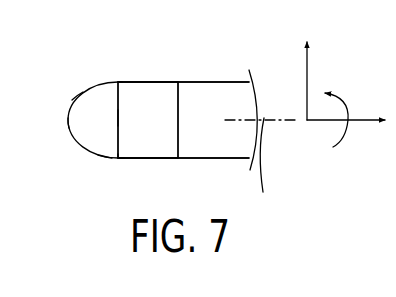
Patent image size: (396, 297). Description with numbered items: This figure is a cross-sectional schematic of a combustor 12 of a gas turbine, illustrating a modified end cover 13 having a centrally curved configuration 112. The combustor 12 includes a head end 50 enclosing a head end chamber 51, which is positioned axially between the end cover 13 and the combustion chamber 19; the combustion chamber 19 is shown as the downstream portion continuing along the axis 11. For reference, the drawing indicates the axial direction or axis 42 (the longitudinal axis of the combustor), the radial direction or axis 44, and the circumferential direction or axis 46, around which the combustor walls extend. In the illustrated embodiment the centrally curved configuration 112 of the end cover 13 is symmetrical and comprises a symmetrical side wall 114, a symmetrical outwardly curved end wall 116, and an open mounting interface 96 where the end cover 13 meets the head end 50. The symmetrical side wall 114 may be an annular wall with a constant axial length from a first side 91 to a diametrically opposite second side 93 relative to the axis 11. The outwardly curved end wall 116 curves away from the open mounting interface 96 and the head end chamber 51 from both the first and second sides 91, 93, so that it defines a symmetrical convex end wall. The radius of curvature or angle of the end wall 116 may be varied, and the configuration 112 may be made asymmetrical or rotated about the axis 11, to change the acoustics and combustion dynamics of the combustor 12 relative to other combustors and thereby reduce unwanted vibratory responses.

The axis 11 is at (261, 143).
The combustor 12 is at (229, 46).
The end cover 13 is at (77, 83).
The combustion chamber 19 is at (217, 128).
The axial direction or axis 42 is at (323, 122).
The radial direction or axis 44 is at (306, 83).
The circumferential direction or axis 46 is at (345, 100).
The head end 50 is at (151, 63).
The head end chamber 51 is at (157, 128).
The first side 91 is at (118, 158).
The second side 93 is at (118, 82).
The open mounting interface 96 is at (118, 118).
The centrally curved configuration 112 is at (62, 107).
The symmetrical side wall 114 is at (106, 158).
The symmetrical outwardly curved end wall 116 is at (69, 122).